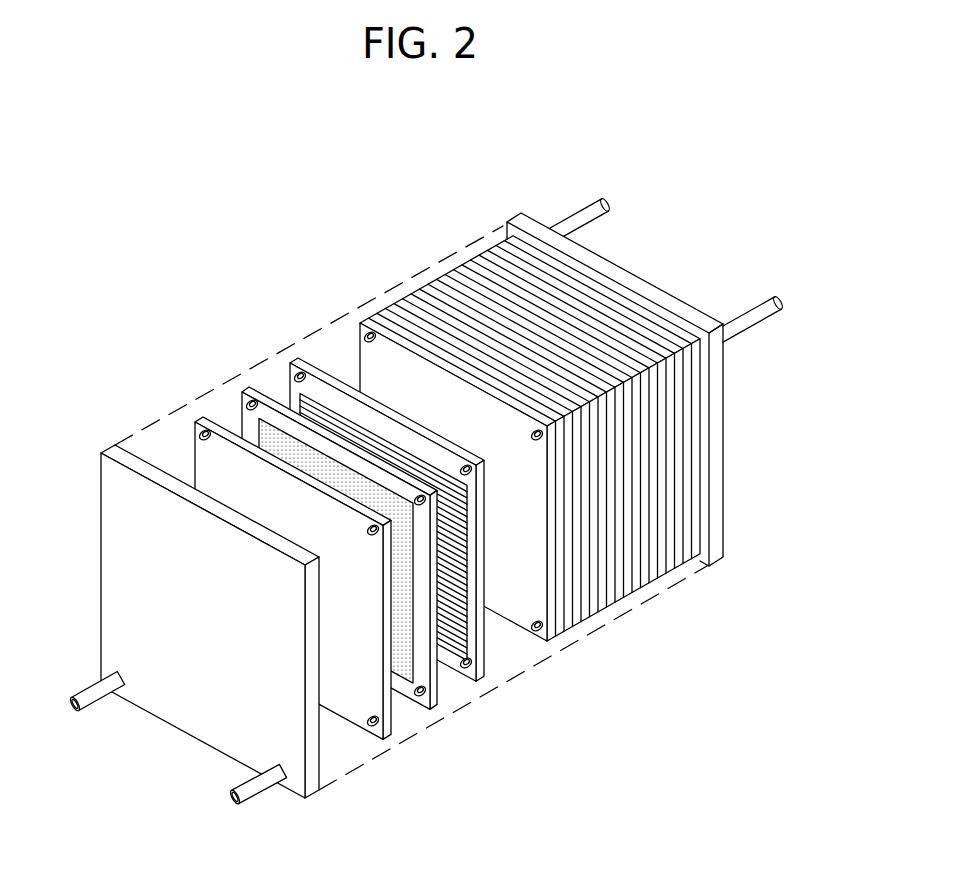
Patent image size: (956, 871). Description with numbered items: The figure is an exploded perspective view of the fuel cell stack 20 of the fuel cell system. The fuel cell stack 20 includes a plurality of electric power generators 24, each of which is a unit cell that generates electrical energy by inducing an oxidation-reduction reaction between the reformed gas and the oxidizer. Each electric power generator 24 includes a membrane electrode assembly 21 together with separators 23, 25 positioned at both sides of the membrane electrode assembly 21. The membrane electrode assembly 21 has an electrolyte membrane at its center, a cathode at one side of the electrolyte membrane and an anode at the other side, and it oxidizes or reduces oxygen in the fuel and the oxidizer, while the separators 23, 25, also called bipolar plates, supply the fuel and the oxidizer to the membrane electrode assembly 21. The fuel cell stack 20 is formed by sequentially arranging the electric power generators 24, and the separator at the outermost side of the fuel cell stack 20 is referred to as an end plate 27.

The fuel cell stack 20 is at (330, 222).
The membrane electrode assembly 21 is at (445, 700).
The separator 23 is at (390, 718).
The electric power generator 24 is at (553, 728).
The separator 25 is at (483, 667).
The end plate 27 is at (208, 722).